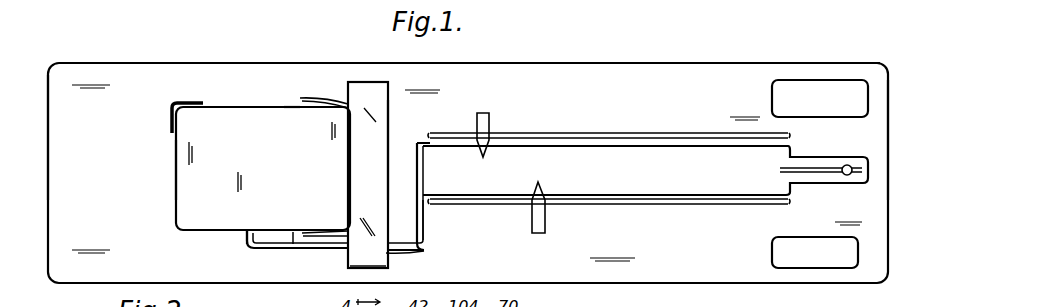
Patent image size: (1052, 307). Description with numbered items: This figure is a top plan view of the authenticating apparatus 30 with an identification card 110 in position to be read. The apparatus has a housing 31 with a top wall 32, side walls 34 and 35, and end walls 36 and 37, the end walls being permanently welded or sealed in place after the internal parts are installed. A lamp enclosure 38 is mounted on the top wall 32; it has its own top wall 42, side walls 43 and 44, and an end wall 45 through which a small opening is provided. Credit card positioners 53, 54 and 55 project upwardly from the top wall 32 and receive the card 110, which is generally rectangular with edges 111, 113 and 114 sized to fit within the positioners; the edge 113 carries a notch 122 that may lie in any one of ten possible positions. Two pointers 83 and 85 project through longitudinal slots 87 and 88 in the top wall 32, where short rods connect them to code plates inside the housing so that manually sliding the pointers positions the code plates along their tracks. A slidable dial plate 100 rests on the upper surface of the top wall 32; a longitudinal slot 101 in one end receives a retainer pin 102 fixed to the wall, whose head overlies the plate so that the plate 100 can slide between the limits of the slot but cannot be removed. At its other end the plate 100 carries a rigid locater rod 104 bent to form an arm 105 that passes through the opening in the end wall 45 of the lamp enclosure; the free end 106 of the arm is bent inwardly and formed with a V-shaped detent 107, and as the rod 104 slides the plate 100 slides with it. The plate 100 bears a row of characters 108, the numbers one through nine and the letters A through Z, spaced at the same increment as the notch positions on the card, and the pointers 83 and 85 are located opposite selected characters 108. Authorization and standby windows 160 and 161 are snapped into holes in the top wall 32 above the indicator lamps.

The authenticating apparatus 30 is at (514, 53).
The housing 31 is at (612, 62).
The top wall 32 is at (93, 82).
The side wall 34 is at (274, 62).
The side wall 35 is at (850, 283).
The end wall 36 is at (48, 90).
The end wall 37 is at (888, 72).
The lamp enclosure 38 is at (369, 82).
The top wall 42 is at (378, 146).
The side wall 43 is at (388, 83).
The side wall 44 is at (384, 268).
The end wall 45 is at (388, 173).
The credit card positioner 53 is at (320, 107).
The credit card positioner 54 is at (318, 240).
The credit card positioner 55 is at (182, 100).
The pointer 83 is at (486, 114).
The pointer 85 is at (537, 234).
The longitudinal slot 87 is at (651, 133).
The longitudinal slot 88 is at (630, 206).
The slide plate 100 is at (697, 146).
The longitudinal slot 101 is at (810, 175).
The retainer pin 102 is at (847, 165).
The locater rod 104 is at (424, 220).
The arm 105 is at (403, 252).
The free end 106 is at (248, 245).
The V-shaped detent 107 is at (253, 233).
The characters 108 is at (462, 165).
The identification card 110 is at (231, 117).
The edge 111 is at (286, 84).
The edge 113 is at (293, 232).
The edge 114 is at (176, 156).
The notch 122 is at (236, 228).
The authorization window 160 is at (815, 80).
The standby window 161 is at (805, 265).